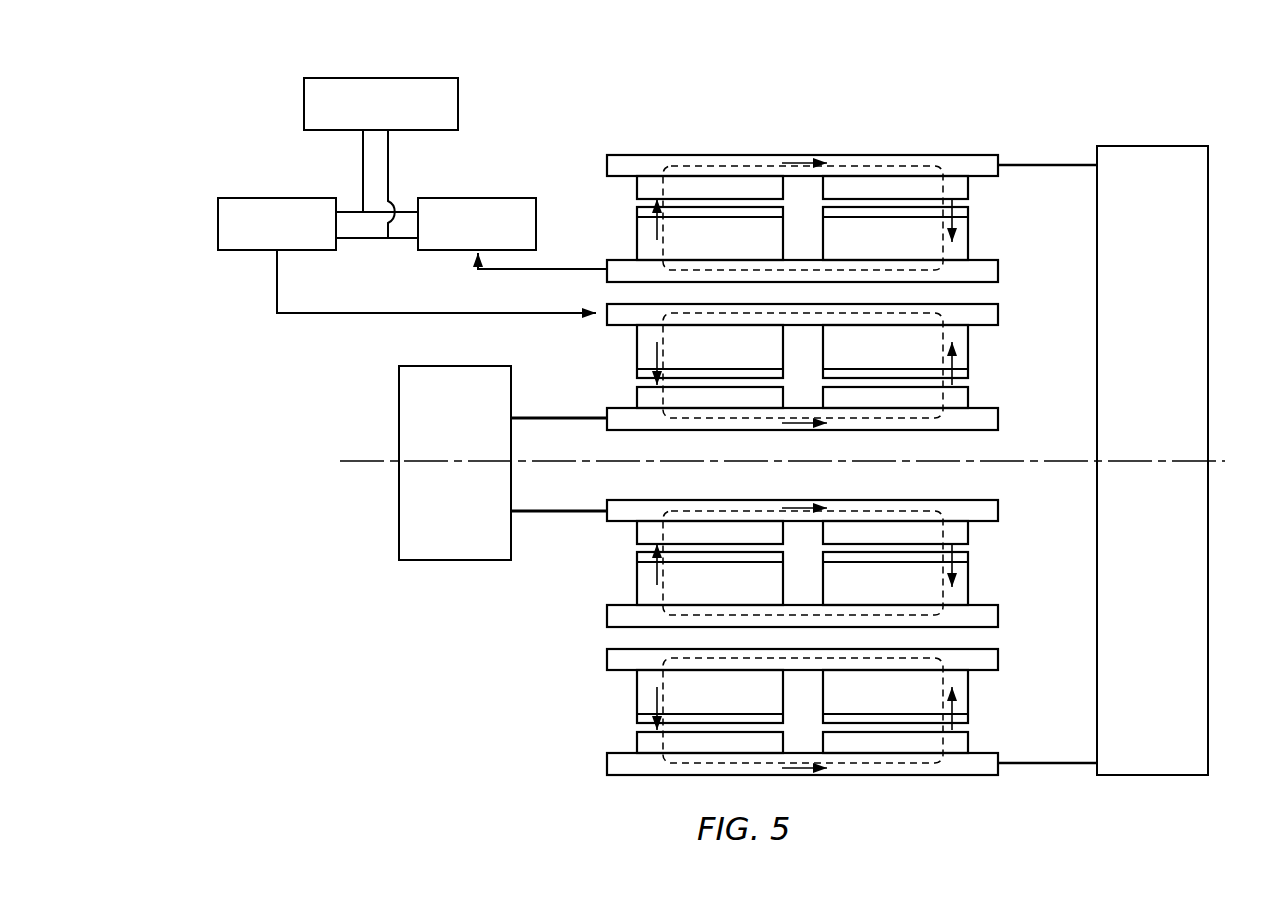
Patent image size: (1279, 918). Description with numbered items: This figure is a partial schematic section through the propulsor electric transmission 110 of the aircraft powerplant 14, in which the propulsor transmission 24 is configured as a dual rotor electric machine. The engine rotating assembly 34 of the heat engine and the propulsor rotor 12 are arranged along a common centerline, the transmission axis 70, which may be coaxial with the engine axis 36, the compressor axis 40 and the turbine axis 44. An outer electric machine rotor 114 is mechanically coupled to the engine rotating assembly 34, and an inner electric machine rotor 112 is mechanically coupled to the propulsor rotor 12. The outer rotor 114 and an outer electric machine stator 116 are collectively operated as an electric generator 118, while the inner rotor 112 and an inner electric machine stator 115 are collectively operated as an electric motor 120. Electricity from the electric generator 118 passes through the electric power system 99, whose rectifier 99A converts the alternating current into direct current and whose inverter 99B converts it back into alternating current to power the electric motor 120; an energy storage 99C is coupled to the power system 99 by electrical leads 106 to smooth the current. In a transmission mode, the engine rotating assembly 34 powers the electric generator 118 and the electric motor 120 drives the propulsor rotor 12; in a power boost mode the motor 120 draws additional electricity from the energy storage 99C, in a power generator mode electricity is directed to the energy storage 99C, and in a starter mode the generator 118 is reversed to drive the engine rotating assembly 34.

The aircraft powerplant 14 is at (1178, 72).
The propulsor rotor 12 is at (464, 419).
The propulsor transmission 24 is at (665, 97).
The propulsor electric transmission 110 is at (810, 465).
The engine rotating assembly 34 is at (1163, 237).
The engine axis 36 is at (375, 462).
The compressor axis 40 is at (782, 464).
The turbine axis 44 is at (782, 464).
The transmission axis 70 is at (782, 464).
The electric power system 99 is at (252, 125).
The rectifier 99A is at (465, 198).
The inverter 99B is at (277, 198).
The energy storage 99C is at (385, 78).
The electrical leads 106 is at (388, 165).
The inner electric machine rotor 112 is at (993, 398).
The outer electric machine rotor 114 is at (988, 187).
The inner electric machine stator 115 is at (985, 340).
The outer electric machine stator 116 is at (993, 250).
The electric generator 118 is at (622, 213).
The electric motor 120 is at (612, 358).